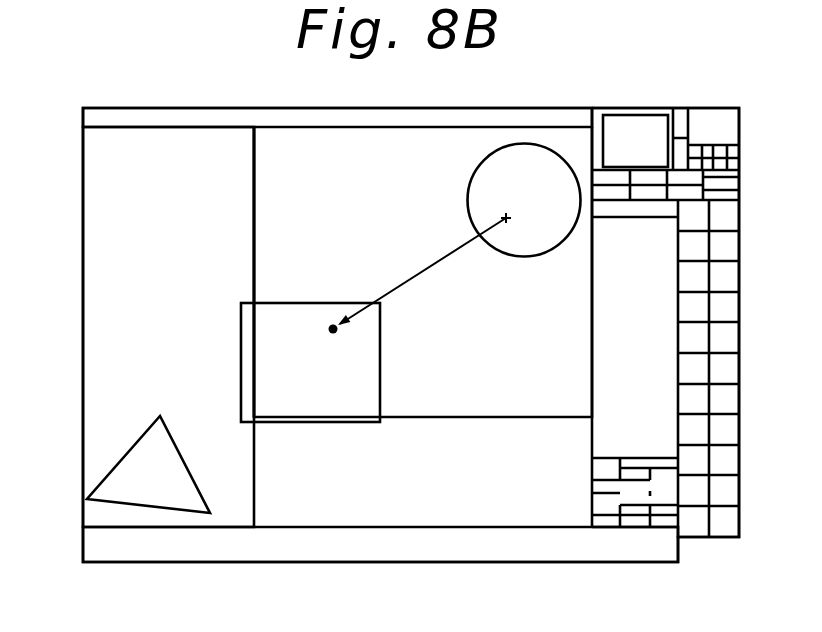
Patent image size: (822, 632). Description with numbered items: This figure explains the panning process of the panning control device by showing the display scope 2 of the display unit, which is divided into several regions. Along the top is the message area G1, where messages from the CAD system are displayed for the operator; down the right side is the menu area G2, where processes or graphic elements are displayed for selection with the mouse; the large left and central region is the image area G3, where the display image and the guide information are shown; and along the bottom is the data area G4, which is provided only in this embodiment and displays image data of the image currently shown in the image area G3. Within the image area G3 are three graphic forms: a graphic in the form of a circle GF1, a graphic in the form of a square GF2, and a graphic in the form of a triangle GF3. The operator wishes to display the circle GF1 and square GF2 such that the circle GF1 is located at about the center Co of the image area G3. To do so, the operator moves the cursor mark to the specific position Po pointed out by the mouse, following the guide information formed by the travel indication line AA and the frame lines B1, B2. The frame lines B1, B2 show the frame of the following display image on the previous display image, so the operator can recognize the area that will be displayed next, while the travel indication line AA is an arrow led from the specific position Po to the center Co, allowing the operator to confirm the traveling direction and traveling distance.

The display screen 2 is at (114, 98).
The message area G1 is at (542, 119).
The menu area G2 is at (665, 317).
The image area G3 is at (98, 330).
The data area G4 is at (515, 547).
The frame line B1 is at (493, 418).
The frame line B2 is at (254, 233).
The graphic in the form of a circle GF1 is at (523, 269).
The graphic in the form of a square GF2 is at (393, 384).
The graphic in the form of a triangle GF3 is at (213, 487).
The travel indication line AA is at (423, 272).
The specific position Po is at (513, 210).
The center of the image area Co is at (333, 331).